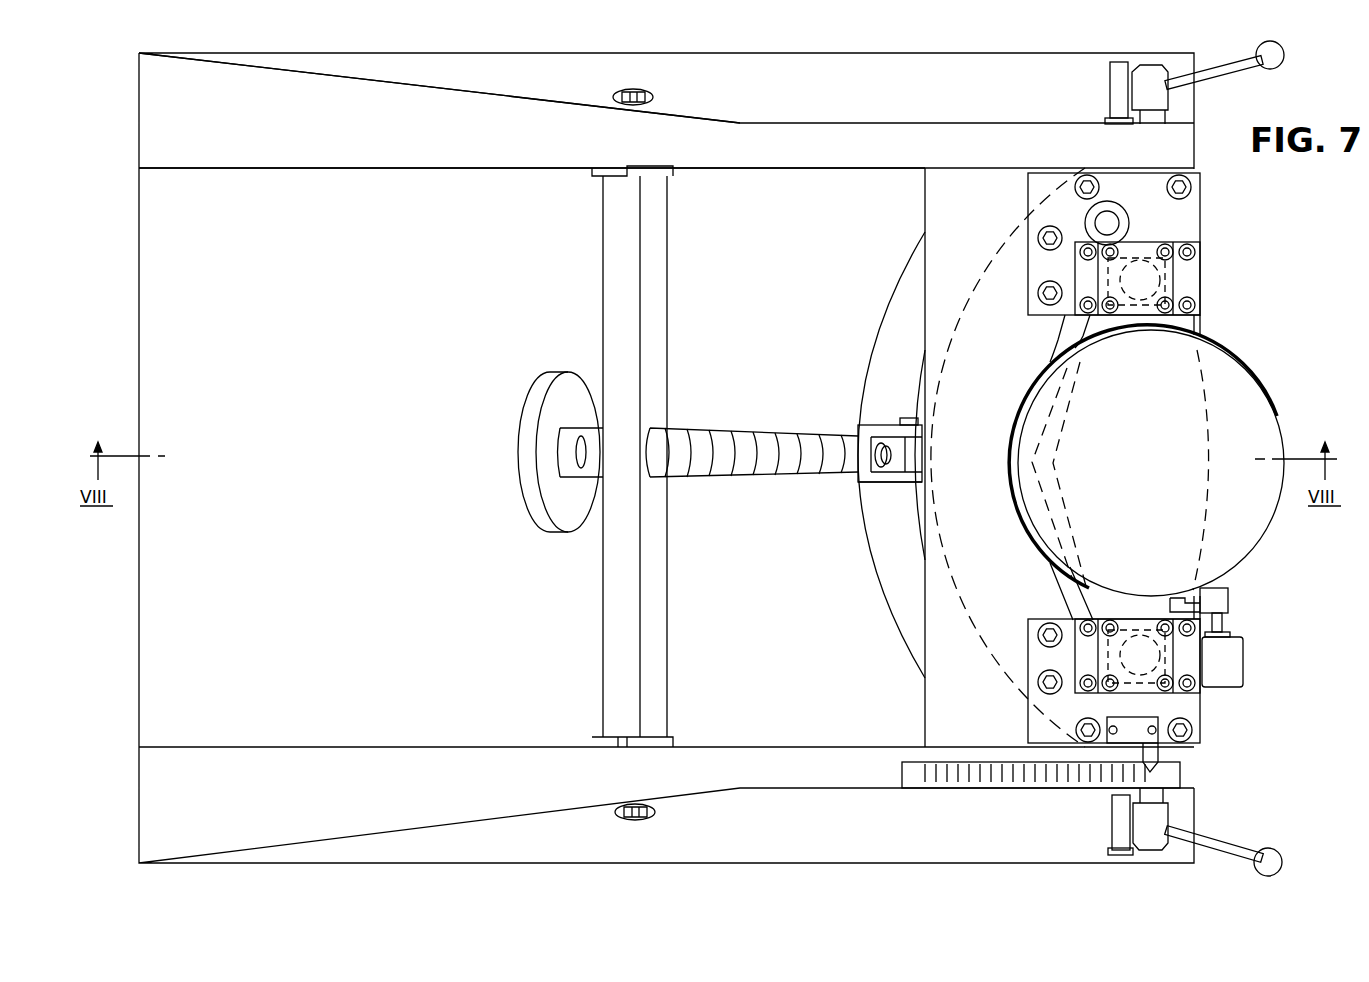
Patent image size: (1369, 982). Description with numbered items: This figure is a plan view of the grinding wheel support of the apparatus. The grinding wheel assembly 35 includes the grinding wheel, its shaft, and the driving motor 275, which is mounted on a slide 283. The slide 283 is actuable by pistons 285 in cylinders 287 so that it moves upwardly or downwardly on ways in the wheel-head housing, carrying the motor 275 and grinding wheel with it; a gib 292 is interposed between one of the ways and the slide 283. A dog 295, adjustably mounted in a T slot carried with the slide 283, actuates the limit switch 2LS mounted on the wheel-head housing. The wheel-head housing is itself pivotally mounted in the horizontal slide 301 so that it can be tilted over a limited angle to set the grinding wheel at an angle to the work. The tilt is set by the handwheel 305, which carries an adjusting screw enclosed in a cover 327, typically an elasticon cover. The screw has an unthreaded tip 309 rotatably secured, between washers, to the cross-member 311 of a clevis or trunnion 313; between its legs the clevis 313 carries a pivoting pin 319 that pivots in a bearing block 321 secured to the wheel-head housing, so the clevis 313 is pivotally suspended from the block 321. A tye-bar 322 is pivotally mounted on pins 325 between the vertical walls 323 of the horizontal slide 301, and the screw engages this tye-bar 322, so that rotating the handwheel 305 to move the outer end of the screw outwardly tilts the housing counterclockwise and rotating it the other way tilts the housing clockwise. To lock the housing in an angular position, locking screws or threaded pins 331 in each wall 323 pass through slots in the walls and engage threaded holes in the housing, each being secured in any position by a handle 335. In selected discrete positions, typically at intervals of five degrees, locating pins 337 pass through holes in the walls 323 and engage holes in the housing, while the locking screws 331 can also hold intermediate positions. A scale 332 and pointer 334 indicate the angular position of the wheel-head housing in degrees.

The horizontal slide 301 is at (131, 776).
The handwheel 305 is at (553, 378).
The unthreaded tip 309 is at (888, 440).
The cross-member 311 is at (863, 478).
The clevis 313 is at (854, 432).
The pivoting pin 319 is at (918, 422).
The bearing block 321 is at (920, 458).
The tye-bar 322 is at (660, 617).
The vertical walls 323 is at (346, 168).
The pins 325 is at (641, 98).
The cover 327 is at (691, 437).
The locking screws 331 is at (1154, 75).
The scale 332 is at (906, 771).
The pointer 334 is at (1108, 718).
The handle 335 is at (1250, 65).
The locating pins 337 is at (1118, 83).
The motor 275 is at (1250, 540).
The slide 283 is at (1200, 329).
The pistons 285 is at (1076, 280).
The cylinders 287 is at (1178, 272).
The gib 292 is at (1120, 240).
The dog 295 is at (1230, 591).
The grinding wheel assembly 35 is at (1307, 418).
The limit switch 2LS is at (1240, 673).